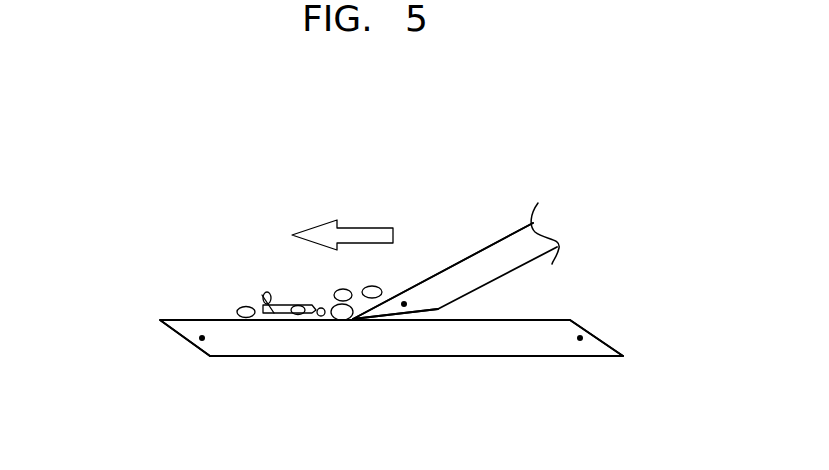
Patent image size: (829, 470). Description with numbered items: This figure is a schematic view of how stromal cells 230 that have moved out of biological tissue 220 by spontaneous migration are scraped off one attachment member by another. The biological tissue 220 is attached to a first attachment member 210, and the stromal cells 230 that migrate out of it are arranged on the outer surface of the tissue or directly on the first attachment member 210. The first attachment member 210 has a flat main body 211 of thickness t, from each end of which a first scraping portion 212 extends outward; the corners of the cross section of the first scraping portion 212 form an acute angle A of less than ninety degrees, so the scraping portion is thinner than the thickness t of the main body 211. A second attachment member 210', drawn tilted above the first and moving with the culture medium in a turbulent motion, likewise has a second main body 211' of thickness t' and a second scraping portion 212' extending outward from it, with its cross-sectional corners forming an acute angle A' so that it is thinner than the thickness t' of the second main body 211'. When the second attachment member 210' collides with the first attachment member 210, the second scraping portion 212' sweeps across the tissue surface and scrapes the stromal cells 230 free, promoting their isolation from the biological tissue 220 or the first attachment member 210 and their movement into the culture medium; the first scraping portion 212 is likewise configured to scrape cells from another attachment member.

The first attachment member 210 is at (391, 383).
The main body 211 is at (416, 391).
The first scraping portion 212 is at (391, 345).
The second attachment member 210' is at (456, 252).
The second main body 211' is at (443, 245).
The second scraping portion 212' is at (395, 363).
The biological tissue 220 is at (283, 300).
The stromal cells 230 is at (240, 303).
The angle A is at (371, 350).
The angle A' is at (423, 359).
The thickness t is at (101, 338).
The thickness t' is at (593, 212).